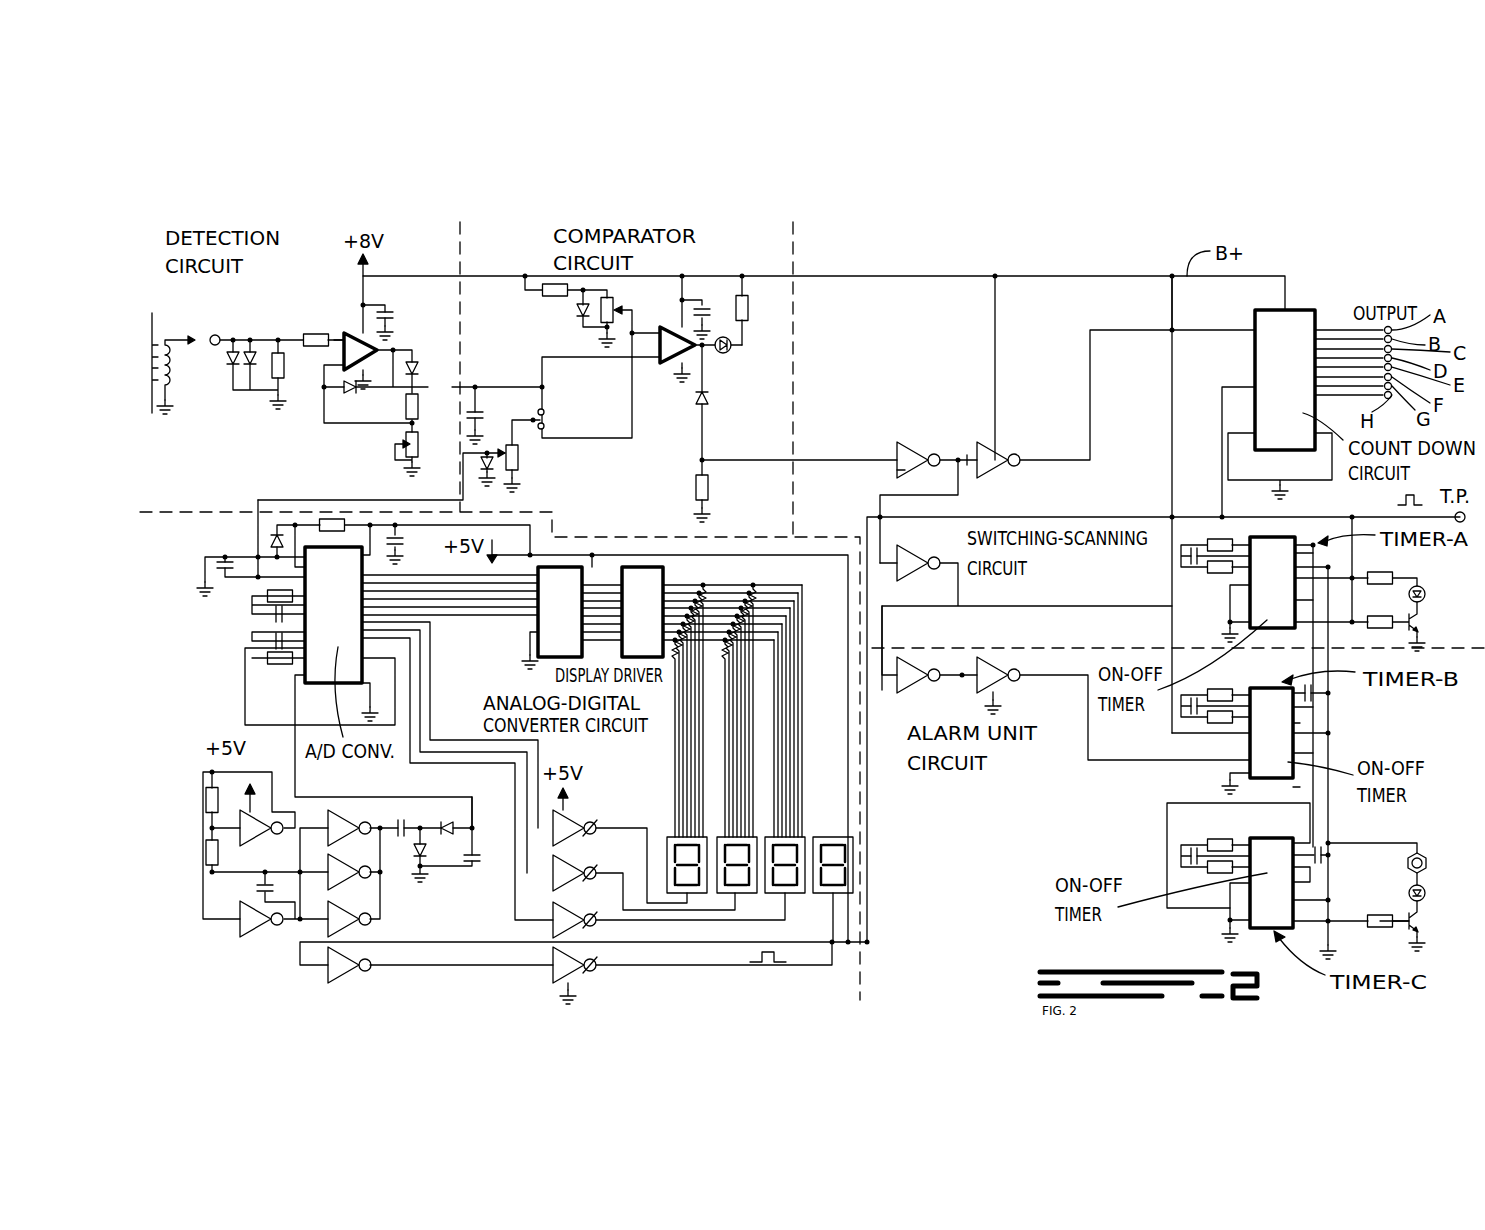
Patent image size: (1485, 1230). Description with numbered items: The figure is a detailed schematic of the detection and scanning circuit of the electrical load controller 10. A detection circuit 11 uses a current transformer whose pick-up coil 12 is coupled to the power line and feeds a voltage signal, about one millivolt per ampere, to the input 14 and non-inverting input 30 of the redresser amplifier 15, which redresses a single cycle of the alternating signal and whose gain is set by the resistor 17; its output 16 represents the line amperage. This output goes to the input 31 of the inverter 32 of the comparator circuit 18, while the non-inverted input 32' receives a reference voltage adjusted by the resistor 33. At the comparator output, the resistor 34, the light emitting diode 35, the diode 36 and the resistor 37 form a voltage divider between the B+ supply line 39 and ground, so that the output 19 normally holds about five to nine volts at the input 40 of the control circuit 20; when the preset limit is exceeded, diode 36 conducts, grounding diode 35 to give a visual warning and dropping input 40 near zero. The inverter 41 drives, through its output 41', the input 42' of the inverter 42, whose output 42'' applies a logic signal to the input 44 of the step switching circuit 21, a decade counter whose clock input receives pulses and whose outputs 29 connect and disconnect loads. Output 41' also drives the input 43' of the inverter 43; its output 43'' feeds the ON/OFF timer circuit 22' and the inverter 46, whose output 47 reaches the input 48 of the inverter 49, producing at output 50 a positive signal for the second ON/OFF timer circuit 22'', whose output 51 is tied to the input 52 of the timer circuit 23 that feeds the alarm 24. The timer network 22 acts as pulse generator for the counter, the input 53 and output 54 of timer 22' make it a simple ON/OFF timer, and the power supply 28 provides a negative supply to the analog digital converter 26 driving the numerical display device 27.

The electrical load controller 10 is at (1086, 264).
The power line 11 is at (152, 330).
The pick-up coil 12 is at (168, 368).
The input 14 is at (340, 336).
The redresser amplifier 15 is at (372, 320).
The output 16 is at (374, 351).
The resistor 17 is at (397, 437).
The comparator circuit 18 is at (725, 296).
The output 19 is at (812, 457).
The control circuit 20 is at (1047, 413).
The step switching circuit 21 is at (1282, 350).
The timer network 22 is at (1360, 584).
The ON/OFF timer circuit 22' is at (1238, 589).
The second ON/OFF timer circuit 22'' is at (1278, 761).
The timer circuit 23 is at (1285, 893).
The alarm 24 is at (1428, 860).
The analog digital converter 26 is at (315, 684).
The numerical display device 27 is at (839, 825).
The power supply 28 is at (192, 762).
The outputs 29 is at (1362, 350).
The non-inverting input 30 is at (336, 332).
The input 31 is at (645, 358).
The inverter 32 is at (726, 373).
The non-inverted input 32' is at (689, 285).
The resistor 33 is at (603, 318).
The resistor 34 is at (750, 305).
The light emitting diode 35 is at (731, 349).
The diode 36 is at (708, 403).
The resistor 37 is at (700, 487).
The B+ supply line 39 is at (880, 278).
The input 40 is at (895, 452).
The inverter 41 is at (872, 483).
The output 41' is at (957, 427).
The inverter 42 is at (1023, 469).
The input 42' is at (1000, 420).
The output 42'' is at (1136, 394).
The inverter 43 is at (925, 554).
The input 43' is at (851, 586).
The output 43'' is at (1027, 619).
The input 44 is at (1250, 327).
The inverter 46 is at (920, 657).
The output 47 is at (962, 665).
The input 48 is at (985, 660).
The inverter 49 is at (998, 690).
The output 50 is at (1017, 672).
The output 51 is at (1290, 806).
The input 52 is at (1200, 910).
The input 53 is at (1173, 758).
The output 54 is at (1304, 722).